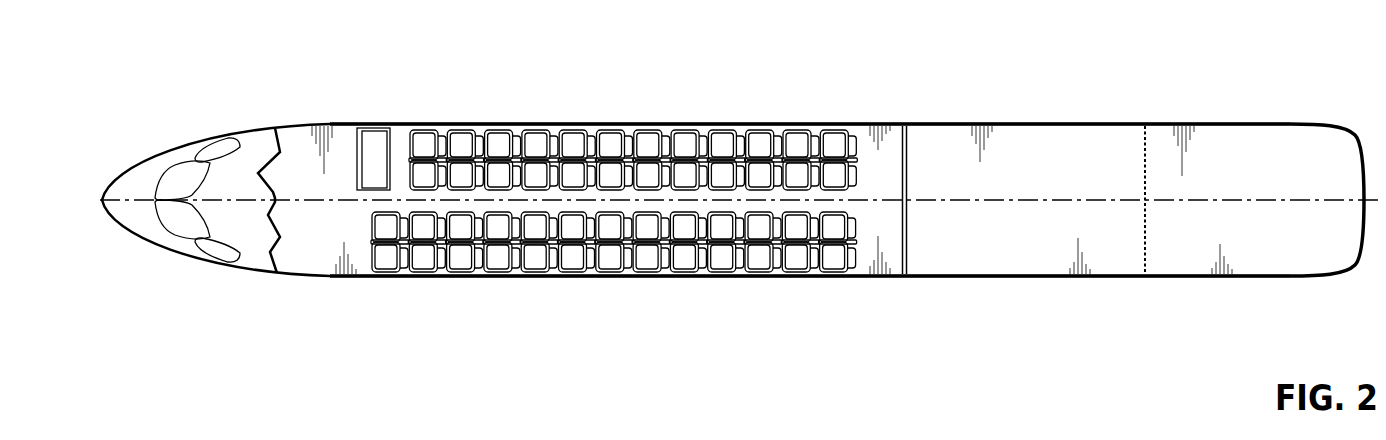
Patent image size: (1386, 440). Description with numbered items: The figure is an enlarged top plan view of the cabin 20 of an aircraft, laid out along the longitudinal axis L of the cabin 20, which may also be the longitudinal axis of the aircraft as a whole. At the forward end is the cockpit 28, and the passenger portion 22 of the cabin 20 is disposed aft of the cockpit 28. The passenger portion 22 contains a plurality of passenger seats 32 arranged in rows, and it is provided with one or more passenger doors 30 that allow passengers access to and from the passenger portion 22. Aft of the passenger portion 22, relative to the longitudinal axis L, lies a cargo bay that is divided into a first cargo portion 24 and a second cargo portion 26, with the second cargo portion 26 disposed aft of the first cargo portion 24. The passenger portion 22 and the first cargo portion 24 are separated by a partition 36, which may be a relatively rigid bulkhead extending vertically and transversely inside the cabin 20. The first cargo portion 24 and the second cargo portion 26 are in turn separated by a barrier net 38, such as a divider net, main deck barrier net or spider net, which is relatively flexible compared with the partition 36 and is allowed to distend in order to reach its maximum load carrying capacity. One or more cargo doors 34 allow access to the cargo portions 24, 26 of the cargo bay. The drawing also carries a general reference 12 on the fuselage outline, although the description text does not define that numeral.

The fuselage 12 is at (785, 120).
The cabin 20 is at (595, 80).
The passenger portion 22 is at (626, 202).
The first cargo portion 24 is at (1000, 251).
The second cargo portion 26 is at (1202, 252).
The cockpit 28 is at (252, 150).
The passenger doors 30 is at (320, 124).
The passenger seats 32 is at (610, 145).
The cargo doors 34 is at (1281, 283).
The partition 36 is at (908, 145).
The barrier net 38 is at (1145, 145).
The longitudinal axis L is at (1293, 200).